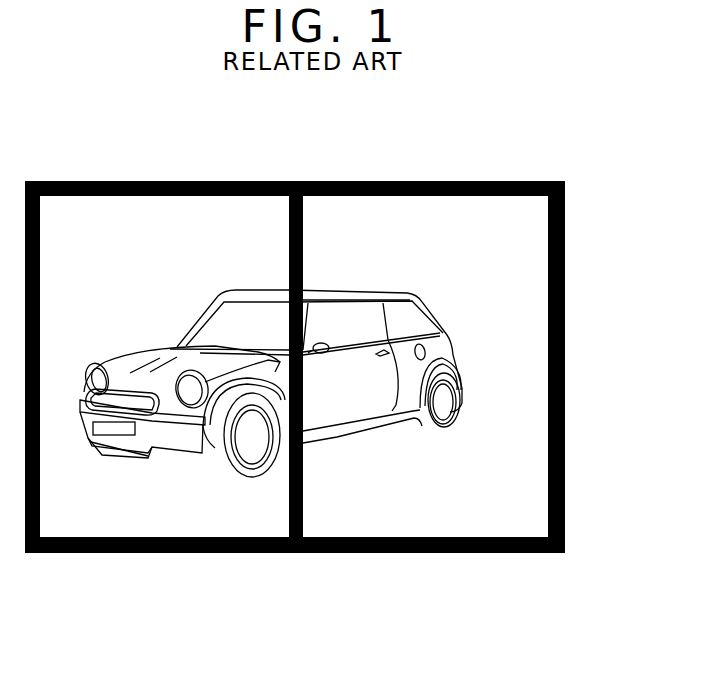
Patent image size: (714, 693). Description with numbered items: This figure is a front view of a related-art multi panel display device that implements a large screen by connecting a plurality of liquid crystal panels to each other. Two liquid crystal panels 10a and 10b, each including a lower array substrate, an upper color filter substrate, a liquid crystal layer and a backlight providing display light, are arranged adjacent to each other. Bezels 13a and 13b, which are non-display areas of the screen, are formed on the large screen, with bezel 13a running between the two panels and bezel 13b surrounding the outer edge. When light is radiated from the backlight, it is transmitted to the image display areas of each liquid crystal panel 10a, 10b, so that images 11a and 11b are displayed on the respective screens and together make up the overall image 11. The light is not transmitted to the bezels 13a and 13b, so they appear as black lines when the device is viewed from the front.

The liquid crystal panel 10a is at (182, 213).
The liquid crystal panel 10b is at (418, 213).
The image 11 is at (271, 479).
The image 11a is at (173, 442).
The image 11b is at (333, 413).
The bezel 13a is at (289, 258).
The bezel 13b is at (304, 258).